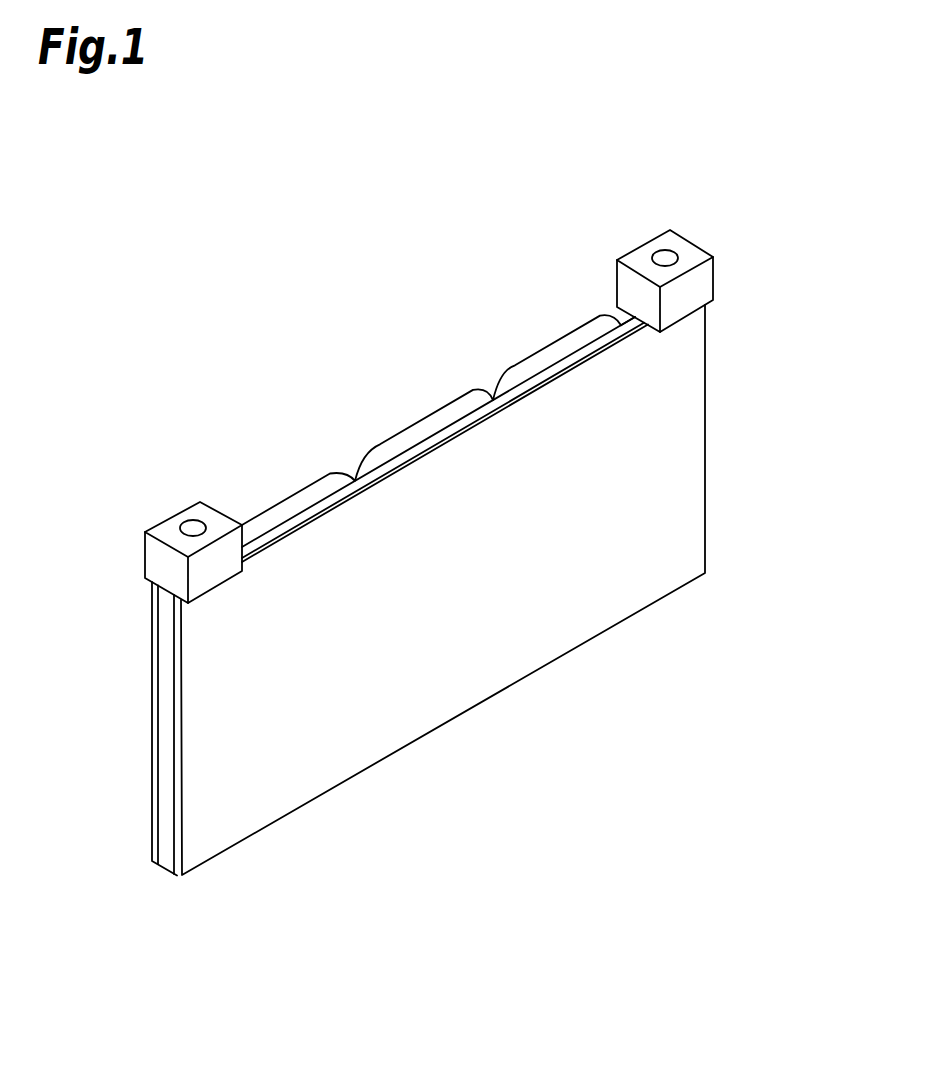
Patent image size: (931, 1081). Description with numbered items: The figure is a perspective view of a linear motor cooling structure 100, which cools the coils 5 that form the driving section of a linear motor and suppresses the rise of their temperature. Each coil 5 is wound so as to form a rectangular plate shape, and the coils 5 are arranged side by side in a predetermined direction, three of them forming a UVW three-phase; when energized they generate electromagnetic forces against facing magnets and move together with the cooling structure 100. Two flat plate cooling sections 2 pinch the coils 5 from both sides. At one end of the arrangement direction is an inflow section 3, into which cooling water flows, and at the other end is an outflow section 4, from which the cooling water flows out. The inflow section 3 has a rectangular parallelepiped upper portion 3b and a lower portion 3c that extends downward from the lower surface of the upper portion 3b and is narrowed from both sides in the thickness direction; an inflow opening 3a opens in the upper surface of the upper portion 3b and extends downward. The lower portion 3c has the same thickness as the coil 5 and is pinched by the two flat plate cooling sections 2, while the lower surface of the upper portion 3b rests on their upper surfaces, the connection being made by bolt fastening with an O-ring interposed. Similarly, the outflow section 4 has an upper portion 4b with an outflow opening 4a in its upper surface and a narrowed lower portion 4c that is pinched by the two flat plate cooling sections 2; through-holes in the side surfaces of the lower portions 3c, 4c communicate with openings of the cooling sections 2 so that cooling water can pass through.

The linear motor cooling structure 100 is at (480, 308).
The flat plate cooling section 2 is at (672, 448).
The inflow section 3 is at (157, 647).
The inflow opening 3a is at (193, 522).
The upper portion 3b is at (155, 555).
The lower portion 3c is at (167, 700).
The outflow section 4 is at (695, 266).
The outflow opening 4a is at (666, 252).
The upper portion 4b is at (702, 285).
The lower portion 4c is at (632, 323).
The coil 5 is at (545, 348).